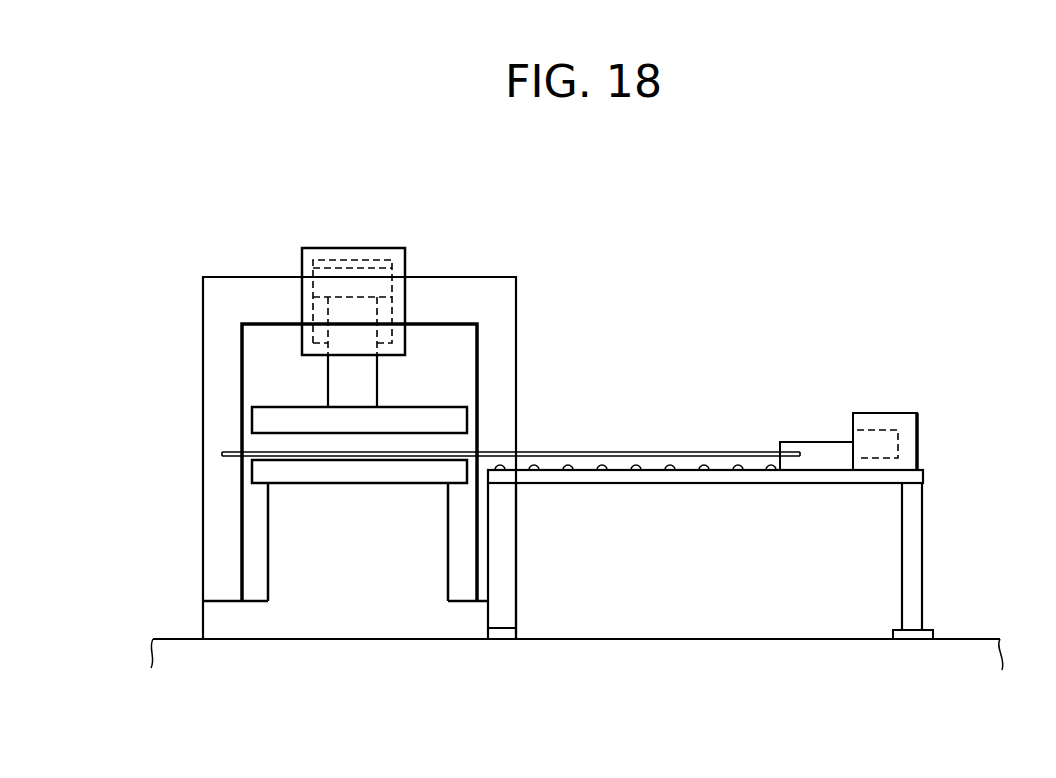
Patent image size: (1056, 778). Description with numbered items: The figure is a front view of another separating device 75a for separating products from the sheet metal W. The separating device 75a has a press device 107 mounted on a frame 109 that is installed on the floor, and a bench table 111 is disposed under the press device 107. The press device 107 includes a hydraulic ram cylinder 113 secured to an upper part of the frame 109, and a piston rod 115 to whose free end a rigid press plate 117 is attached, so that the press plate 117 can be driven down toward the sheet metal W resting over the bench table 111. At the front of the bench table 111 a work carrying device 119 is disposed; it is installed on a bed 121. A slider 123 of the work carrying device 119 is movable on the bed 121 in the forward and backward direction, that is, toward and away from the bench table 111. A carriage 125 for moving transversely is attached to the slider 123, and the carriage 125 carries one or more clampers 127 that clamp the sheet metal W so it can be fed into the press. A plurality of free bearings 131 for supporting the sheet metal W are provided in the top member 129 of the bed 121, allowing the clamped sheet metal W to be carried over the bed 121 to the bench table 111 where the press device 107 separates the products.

The separating device 75a is at (599, 287).
The press device 107 is at (413, 348).
The frame 109 is at (505, 349).
The bench table 111 is at (350, 483).
The hydraulic ram cylinder 113 is at (351, 248).
The piston rod 115 is at (337, 385).
The press plate 117 is at (255, 420).
The work carrying device 119 is at (845, 407).
The bed 121 is at (913, 556).
The slider 123 is at (899, 415).
The carriage 125 is at (908, 443).
The clamper 127 is at (795, 443).
The top member 129 is at (723, 483).
The free bearings 131 is at (601, 468).
The sheet metal W is at (648, 453).